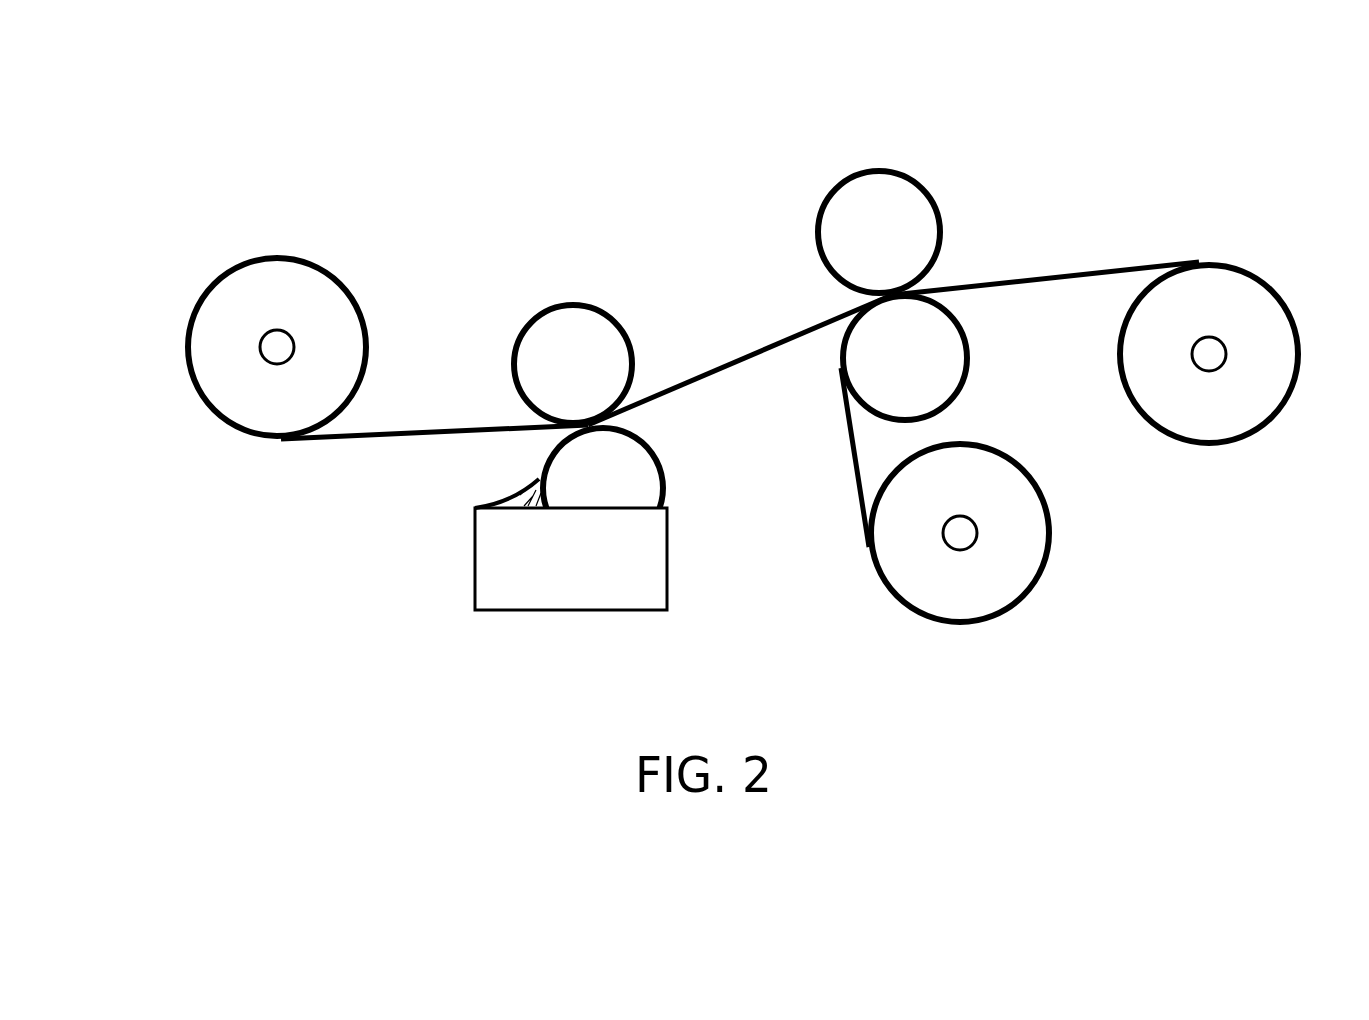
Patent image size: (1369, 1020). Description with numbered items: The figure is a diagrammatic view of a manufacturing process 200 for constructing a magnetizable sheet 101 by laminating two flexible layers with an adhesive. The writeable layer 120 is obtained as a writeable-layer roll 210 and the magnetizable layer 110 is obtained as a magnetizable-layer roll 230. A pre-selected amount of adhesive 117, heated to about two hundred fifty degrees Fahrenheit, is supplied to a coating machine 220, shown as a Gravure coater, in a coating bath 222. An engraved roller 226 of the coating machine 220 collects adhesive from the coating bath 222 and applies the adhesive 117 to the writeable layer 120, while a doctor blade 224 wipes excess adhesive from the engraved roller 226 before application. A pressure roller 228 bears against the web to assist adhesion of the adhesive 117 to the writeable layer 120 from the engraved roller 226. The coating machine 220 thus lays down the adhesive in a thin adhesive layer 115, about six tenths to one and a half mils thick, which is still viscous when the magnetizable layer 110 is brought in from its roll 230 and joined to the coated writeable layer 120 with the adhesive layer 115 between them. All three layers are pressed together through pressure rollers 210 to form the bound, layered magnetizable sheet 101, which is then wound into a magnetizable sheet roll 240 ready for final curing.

The manufacturing process 200 is at (218, 144).
The writeable-layer roll 210 is at (189, 322).
The writeable layer 120 is at (456, 431).
The pressure roller 228 is at (567, 304).
The engraved roller 226 is at (665, 476).
The doctor blade 224 is at (527, 486).
The adhesive 117 is at (518, 497).
The coating bath 222 is at (475, 552).
The coating machine 220 is at (432, 570).
The adhesive layer 115 is at (722, 369).
The magnetizable layer 110 is at (855, 458).
The magnetizable sheet 101 is at (1100, 272).
The magnetizable-layer roll 230 is at (936, 618).
The magnetizable sheet roll 240 is at (1118, 348).